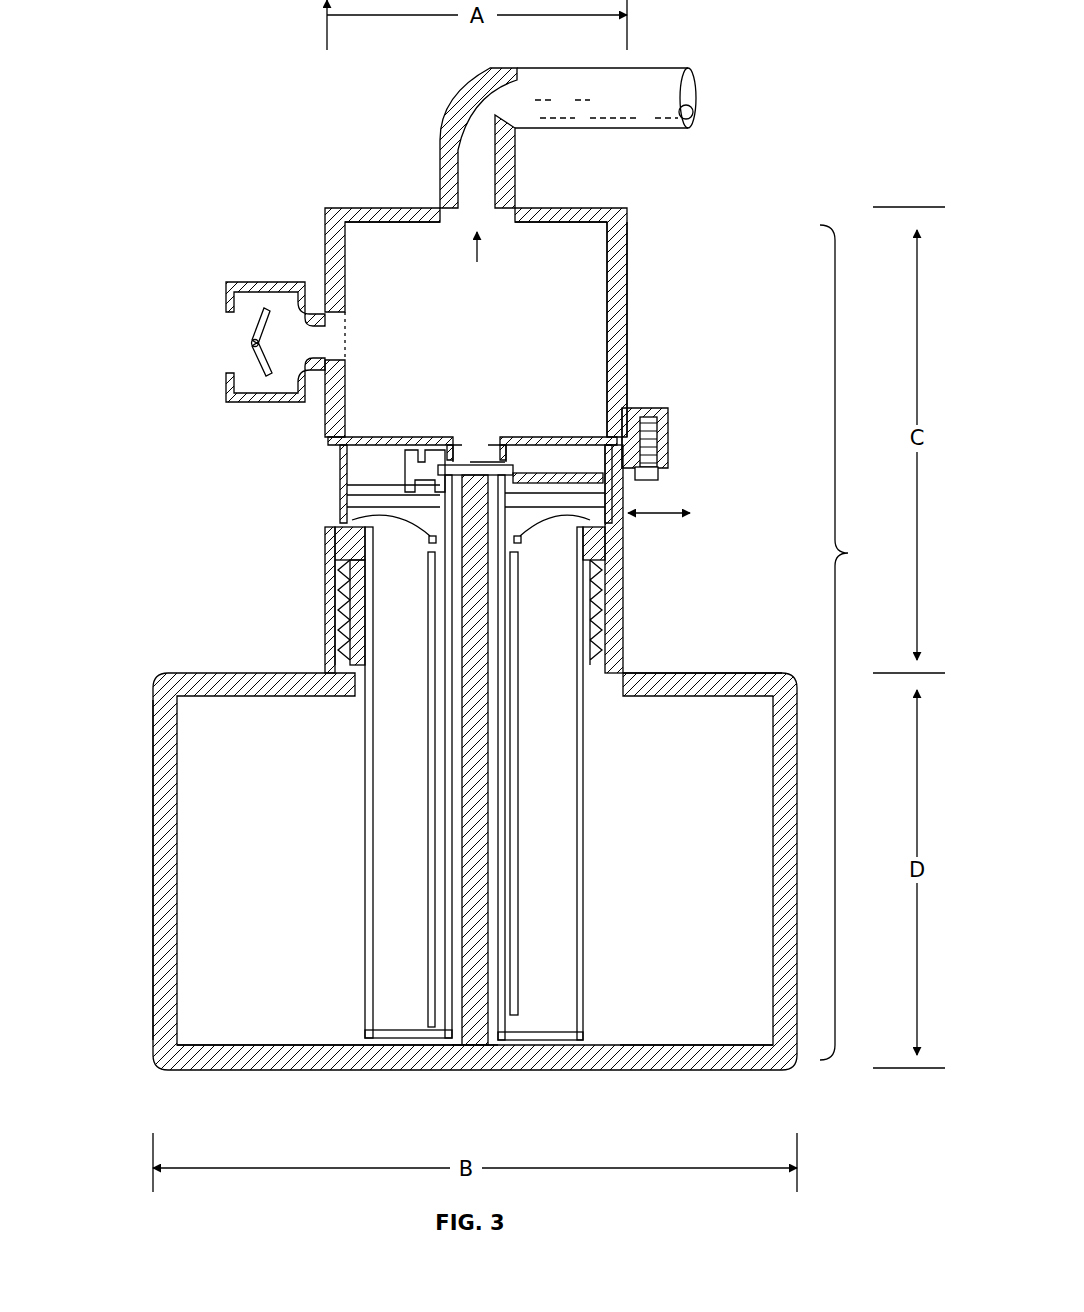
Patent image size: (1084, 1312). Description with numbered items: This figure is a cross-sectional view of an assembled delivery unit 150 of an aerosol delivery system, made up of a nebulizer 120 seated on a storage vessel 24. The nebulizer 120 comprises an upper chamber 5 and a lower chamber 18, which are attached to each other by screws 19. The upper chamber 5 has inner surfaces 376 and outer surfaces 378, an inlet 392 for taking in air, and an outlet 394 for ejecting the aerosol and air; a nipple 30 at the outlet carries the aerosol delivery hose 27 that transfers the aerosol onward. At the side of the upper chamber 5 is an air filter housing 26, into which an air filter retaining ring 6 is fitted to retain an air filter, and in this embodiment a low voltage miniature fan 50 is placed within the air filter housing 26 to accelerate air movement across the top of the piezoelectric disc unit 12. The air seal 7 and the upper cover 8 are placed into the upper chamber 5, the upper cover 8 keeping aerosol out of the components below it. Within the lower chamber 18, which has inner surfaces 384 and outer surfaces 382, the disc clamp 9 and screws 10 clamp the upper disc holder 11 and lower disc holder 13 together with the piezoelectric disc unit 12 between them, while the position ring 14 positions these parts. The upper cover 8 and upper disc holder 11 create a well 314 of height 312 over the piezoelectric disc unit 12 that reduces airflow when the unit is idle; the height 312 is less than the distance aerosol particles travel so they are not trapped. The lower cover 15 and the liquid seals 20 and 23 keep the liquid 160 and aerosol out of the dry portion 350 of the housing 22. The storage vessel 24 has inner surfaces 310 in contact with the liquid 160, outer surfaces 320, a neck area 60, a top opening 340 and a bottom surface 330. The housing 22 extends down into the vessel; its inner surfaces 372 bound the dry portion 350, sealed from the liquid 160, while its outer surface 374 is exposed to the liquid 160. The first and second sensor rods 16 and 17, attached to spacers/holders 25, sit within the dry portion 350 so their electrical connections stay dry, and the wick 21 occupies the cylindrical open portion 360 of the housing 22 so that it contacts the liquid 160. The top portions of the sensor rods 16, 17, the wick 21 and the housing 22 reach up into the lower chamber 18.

The upper chamber 5 is at (626, 216).
The air filter retaining ring 6 is at (226, 297).
The air seal 7 is at (650, 408).
The upper cover 8 is at (628, 372).
The disc clamp 9 is at (405, 460).
The screws 10 is at (405, 487).
The upper disc holder 11 is at (498, 462).
The piezoelectric disc unit 12 is at (470, 460).
The lower disc holder 13 is at (535, 470).
The position ring 14 is at (604, 478).
The lower cover 15 is at (606, 496).
The first sensor rod 16 is at (430, 556).
The second sensor rod 17 is at (600, 582).
The lower chamber 18 is at (679, 516).
The screws 19 is at (659, 468).
The liquid seal 20 is at (604, 538).
The wick 21 is at (482, 877).
The housing 22 is at (365, 718).
The liquid seal 23 is at (604, 560).
The storage vessel 24 is at (752, 671).
The spacers/holders 25 is at (352, 520).
The air filter housing 26 is at (262, 282).
The aerosol delivery hose 27 is at (674, 68).
The nipple 30 is at (445, 133).
The low voltage miniature fan 50 is at (242, 344).
The neck area 60 is at (606, 625).
The nebulizer 120 is at (856, 642).
The delivery unit 150 is at (172, 480).
The liquid 160 is at (715, 1012).
The inner surfaces 310 is at (183, 870).
The height 312 is at (481, 460).
The well 314 is at (458, 452).
The outer surfaces 320 is at (151, 925).
The bottom surface 330 is at (258, 1043).
The top opening 340 is at (392, 574).
The dry portion 350 is at (395, 842).
The cylindrical open portion 360 is at (470, 1052).
The inner surfaces 372 is at (378, 767).
The outer surface 374 is at (366, 750).
The inner surfaces 376 is at (608, 296).
The outer surfaces 378 is at (355, 205).
The outer surfaces 382 is at (332, 541).
The inner surfaces 384 is at (330, 636).
The inlet 392 is at (338, 343).
The outlet 394 is at (477, 258).